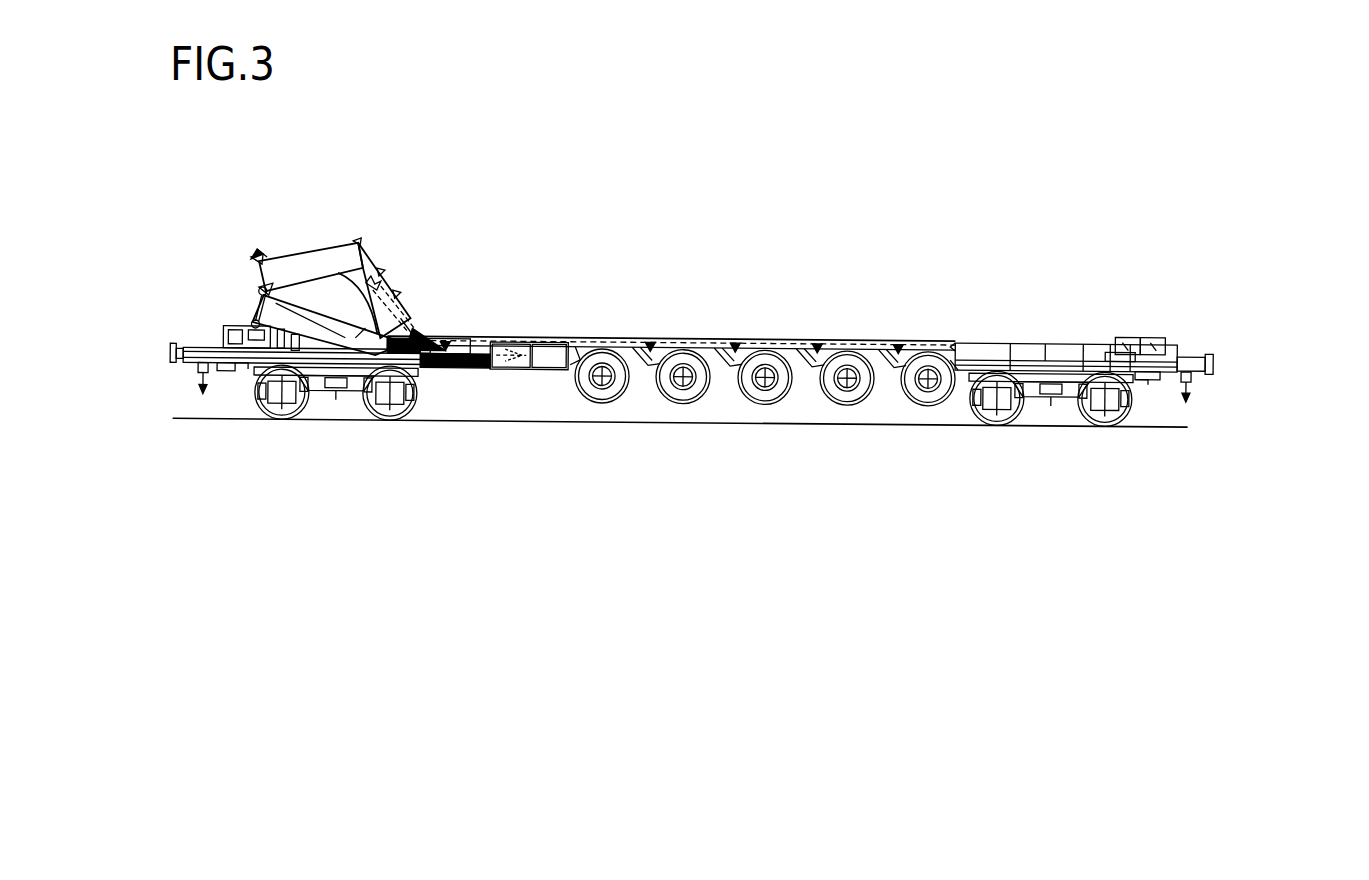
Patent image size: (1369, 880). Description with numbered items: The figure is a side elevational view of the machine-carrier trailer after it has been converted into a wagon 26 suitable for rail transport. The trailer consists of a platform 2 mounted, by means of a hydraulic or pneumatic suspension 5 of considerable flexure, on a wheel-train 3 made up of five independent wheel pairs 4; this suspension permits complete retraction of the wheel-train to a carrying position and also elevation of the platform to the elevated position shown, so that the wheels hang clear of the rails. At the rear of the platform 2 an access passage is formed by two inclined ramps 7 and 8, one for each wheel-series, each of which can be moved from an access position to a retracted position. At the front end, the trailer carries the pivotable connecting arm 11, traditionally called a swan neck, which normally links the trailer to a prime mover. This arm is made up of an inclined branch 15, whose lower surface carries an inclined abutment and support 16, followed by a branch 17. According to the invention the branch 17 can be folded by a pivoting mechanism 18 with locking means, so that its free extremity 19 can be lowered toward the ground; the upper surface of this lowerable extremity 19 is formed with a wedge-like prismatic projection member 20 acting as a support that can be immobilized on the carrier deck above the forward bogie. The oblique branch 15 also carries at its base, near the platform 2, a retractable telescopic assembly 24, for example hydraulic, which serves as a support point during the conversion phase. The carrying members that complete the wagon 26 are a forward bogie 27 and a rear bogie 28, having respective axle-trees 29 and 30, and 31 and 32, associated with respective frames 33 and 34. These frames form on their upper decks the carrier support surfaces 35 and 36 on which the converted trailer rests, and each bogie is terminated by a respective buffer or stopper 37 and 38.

The platform 2 is at (773, 327).
The wheel-train 3 is at (730, 383).
The wheel pairs 4 is at (597, 397).
The hydraulic or pneumatic suspension 5 is at (643, 383).
The inclined ramp 7 is at (1063, 311).
The inclined ramp 8 is at (980, 357).
The connecting arm 11 is at (368, 250).
The inclined branch 15 is at (393, 290).
The inclined abutment and support 16 is at (408, 322).
The branch 17 is at (268, 252).
The pivoting mechanism 18 is at (257, 297).
The free extremity 19 is at (322, 329).
The wedge-like prismatic projection member 20 is at (320, 352).
The retractable telescopic assembly 24 is at (400, 307).
The wagon 26 is at (608, 263).
The forward bogie 27 is at (357, 428).
The rear bogie 28 is at (1047, 438).
The axle-tree 29 is at (280, 413).
The axle-tree 30 is at (400, 413).
The axle-tree 31 is at (997, 413).
The axle-tree 32 is at (1107, 415).
The frame 33 is at (240, 378).
The frame 34 is at (1145, 378).
The carrier support surface 35 is at (210, 330).
The carrier support surface 36 is at (1168, 348).
The buffer 37 is at (160, 353).
The buffer 38 is at (1217, 352).